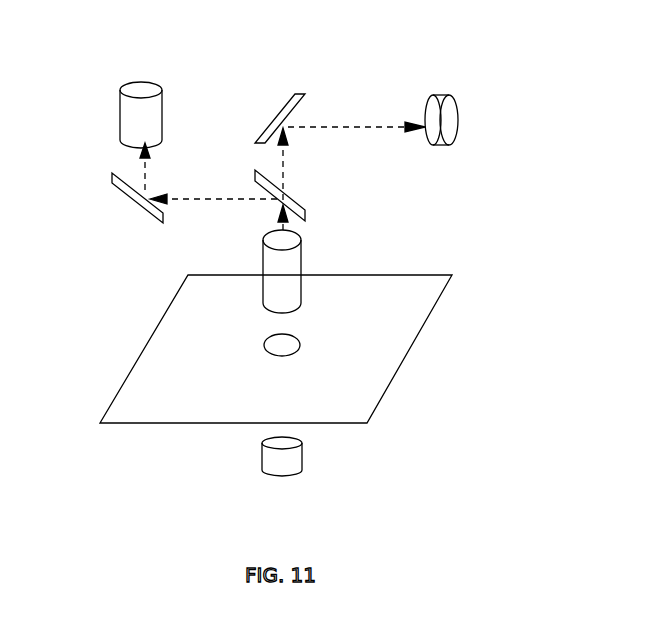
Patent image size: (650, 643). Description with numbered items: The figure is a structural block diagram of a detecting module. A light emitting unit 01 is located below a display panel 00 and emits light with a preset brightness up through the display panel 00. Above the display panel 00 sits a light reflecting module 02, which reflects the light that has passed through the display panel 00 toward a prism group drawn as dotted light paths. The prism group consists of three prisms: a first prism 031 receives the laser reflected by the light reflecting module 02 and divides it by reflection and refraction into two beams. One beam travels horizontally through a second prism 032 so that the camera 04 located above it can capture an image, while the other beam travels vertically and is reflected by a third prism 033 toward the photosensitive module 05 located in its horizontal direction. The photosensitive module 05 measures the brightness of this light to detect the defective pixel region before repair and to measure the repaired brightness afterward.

The display panel 00 is at (314, 328).
The light emitting unit 01 is at (225, 485).
The light reflecting module 02 is at (377, 294).
The first prism 031 is at (325, 198).
The second prism 032 is at (91, 223).
The third prism 033 is at (280, 83).
The camera 04 is at (138, 79).
The photosensitive module 05 is at (438, 84).